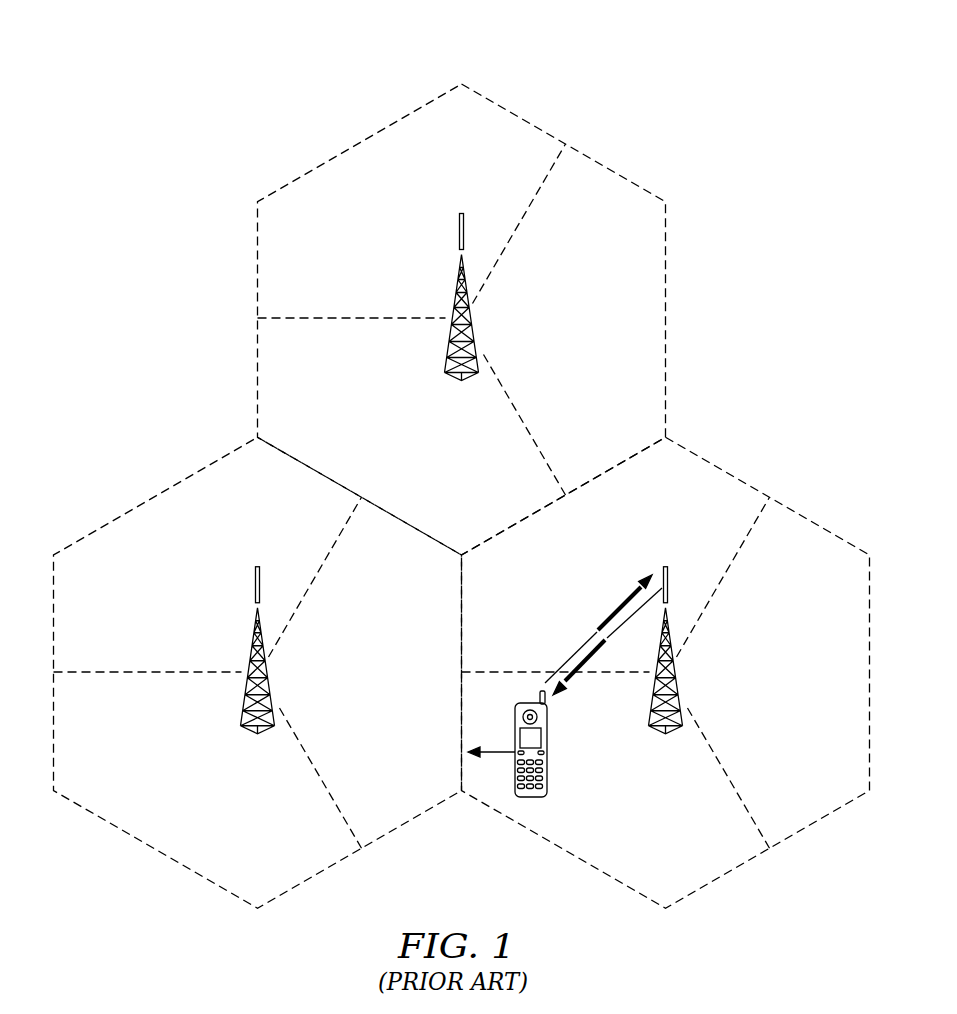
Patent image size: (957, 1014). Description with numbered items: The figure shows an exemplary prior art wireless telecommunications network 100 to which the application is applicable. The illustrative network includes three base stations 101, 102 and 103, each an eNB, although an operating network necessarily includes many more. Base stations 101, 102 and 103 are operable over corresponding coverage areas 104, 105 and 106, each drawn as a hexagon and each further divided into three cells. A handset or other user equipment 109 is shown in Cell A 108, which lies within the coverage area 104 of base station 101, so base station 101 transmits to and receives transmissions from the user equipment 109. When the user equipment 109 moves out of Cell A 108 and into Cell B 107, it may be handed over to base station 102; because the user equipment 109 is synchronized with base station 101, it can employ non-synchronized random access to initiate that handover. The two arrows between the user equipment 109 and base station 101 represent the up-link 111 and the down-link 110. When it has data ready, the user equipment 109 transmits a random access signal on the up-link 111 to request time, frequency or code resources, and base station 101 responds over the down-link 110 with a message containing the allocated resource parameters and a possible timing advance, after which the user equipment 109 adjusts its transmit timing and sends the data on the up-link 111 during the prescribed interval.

The wireless telecommunications network 100 is at (250, 68).
The base station 101 is at (681, 685).
The base station 102 is at (254, 628).
The base station 103 is at (457, 278).
The coverage area 104 is at (802, 832).
The coverage area 105 is at (152, 848).
The coverage area 106 is at (667, 312).
The Cell B 107 is at (412, 791).
The Cell A 108 is at (672, 861).
The user equipment 109 is at (547, 762).
The down-link 110 is at (585, 668).
The up-link 111 is at (618, 612).